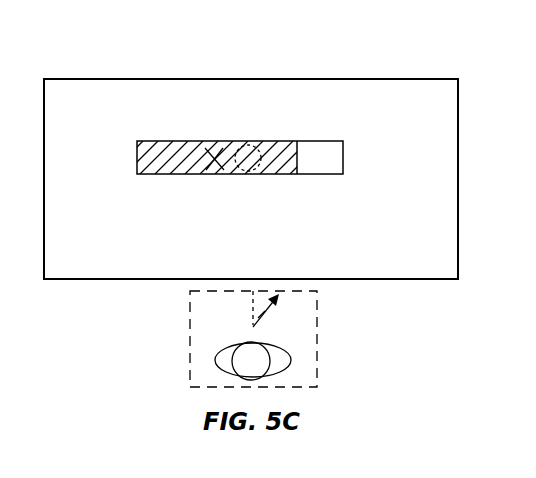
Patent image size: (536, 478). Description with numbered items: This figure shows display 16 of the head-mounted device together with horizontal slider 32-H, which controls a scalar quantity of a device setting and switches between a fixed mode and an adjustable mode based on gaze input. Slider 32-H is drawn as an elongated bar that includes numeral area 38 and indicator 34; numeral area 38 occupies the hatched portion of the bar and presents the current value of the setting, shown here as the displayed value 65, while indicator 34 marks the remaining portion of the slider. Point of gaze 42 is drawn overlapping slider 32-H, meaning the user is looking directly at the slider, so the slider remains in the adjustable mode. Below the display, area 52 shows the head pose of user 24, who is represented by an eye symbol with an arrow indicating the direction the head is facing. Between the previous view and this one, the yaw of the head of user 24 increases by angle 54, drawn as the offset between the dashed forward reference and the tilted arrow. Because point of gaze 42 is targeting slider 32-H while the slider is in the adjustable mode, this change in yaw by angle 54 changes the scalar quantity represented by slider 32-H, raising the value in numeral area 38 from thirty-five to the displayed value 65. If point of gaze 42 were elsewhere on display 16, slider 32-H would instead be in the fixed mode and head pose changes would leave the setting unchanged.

The display 16 is at (400, 79).
The slider 32-H is at (287, 117).
The numeral area 38 is at (247, 176).
The indicator 34 is at (301, 182).
The point of gaze 42 is at (212, 151).
The indicator 65 is at (248, 158).
The area 52 is at (320, 350).
The angle 54 is at (258, 318).
The user 24 is at (215, 360).